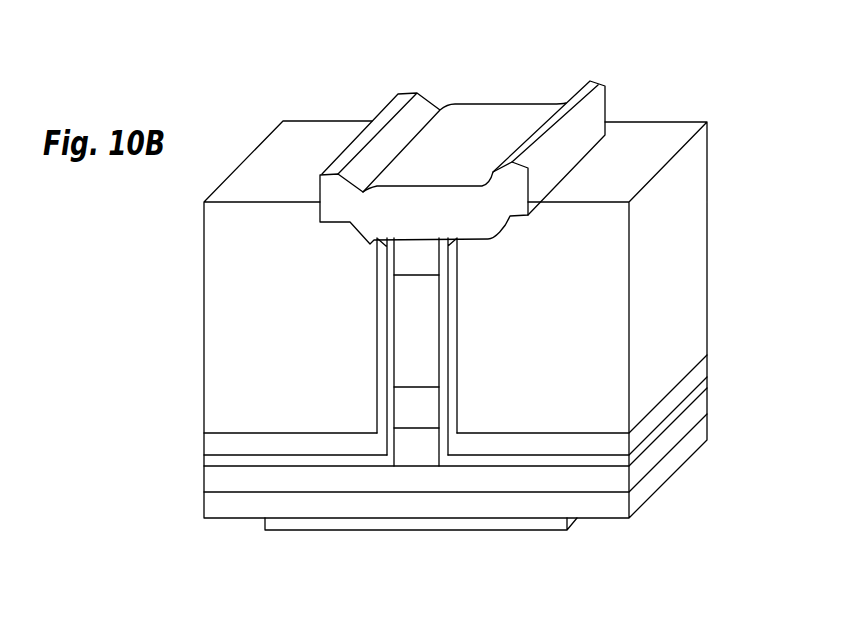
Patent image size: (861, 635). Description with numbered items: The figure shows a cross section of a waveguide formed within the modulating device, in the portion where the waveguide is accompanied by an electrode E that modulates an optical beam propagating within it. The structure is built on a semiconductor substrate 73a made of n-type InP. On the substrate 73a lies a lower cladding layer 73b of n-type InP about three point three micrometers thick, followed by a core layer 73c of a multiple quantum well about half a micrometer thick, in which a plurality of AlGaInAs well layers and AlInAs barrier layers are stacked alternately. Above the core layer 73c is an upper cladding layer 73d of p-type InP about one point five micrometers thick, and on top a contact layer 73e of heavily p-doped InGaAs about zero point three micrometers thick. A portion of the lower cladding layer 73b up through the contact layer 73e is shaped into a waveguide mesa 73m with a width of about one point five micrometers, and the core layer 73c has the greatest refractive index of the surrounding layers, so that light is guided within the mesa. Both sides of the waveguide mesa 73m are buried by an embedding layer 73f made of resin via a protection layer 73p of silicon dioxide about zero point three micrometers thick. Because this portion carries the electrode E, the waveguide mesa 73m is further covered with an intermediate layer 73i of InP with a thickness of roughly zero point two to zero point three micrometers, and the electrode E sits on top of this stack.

The electrode E is at (509, 110).
The semiconductor substrate 73a is at (702, 428).
The lower cladding layer 73b is at (707, 403).
The intermediate layer 73i is at (707, 378).
The protection layer 73p is at (702, 370).
The embedding layer 73f is at (700, 256).
The core layer 73c is at (428, 402).
The upper cladding layer 73d is at (428, 327).
The contact layer 73e is at (428, 258).
The waveguide mesa 73m is at (555, 253).